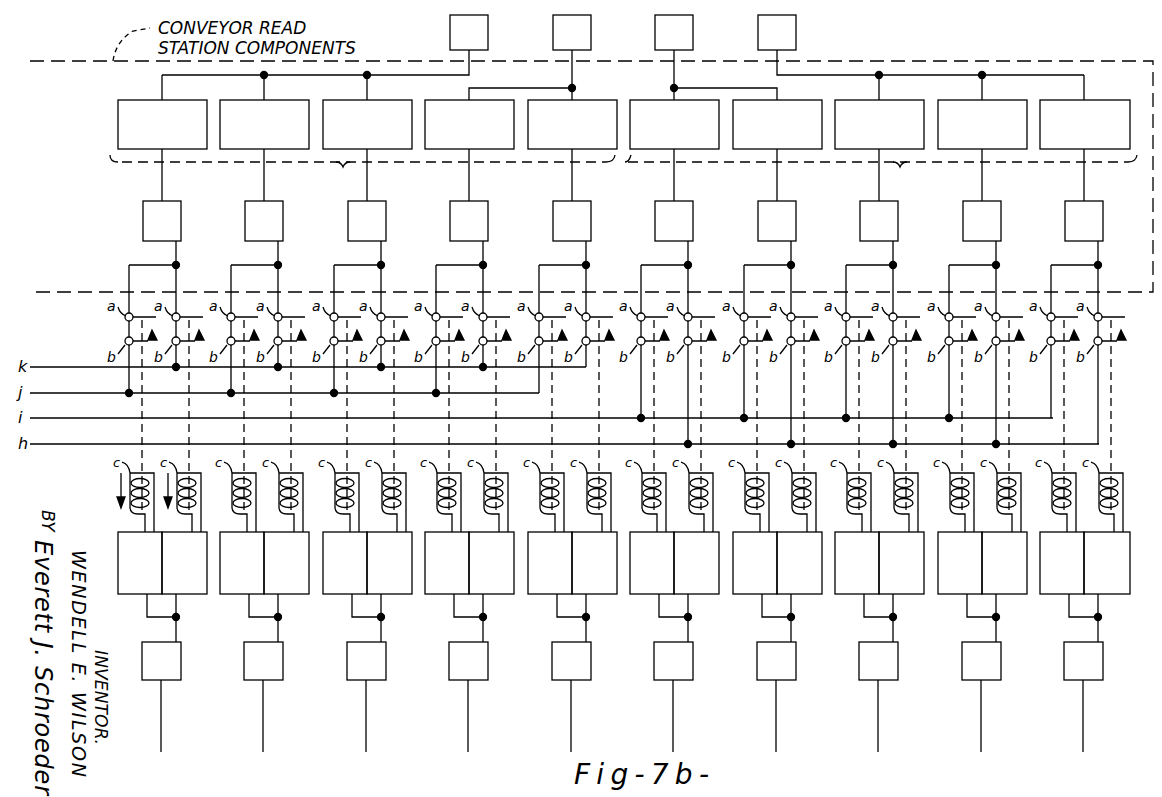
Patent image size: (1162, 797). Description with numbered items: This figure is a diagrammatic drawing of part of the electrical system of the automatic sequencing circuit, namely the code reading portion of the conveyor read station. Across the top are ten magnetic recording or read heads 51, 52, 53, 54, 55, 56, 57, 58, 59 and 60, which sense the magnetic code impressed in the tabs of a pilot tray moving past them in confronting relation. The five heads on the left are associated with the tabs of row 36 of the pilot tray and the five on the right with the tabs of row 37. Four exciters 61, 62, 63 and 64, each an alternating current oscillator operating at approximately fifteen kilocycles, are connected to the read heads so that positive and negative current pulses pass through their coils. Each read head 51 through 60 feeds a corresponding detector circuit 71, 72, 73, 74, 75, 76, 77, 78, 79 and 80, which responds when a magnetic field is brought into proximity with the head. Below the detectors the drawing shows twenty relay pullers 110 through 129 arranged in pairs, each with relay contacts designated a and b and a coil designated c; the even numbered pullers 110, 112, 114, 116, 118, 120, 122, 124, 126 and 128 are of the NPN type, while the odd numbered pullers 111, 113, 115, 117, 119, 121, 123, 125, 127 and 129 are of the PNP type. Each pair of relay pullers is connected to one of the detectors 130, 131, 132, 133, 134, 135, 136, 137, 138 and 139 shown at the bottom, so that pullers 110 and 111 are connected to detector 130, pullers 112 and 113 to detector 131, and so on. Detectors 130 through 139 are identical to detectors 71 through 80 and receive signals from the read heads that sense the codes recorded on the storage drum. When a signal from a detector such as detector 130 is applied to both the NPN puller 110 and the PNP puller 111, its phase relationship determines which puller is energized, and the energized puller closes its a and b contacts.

The row of tabs 36 is at (362, 172).
The row of tabs 37 is at (881, 173).
The magnetic detecting head 51 is at (172, 100).
The magnetic detecting head 52 is at (274, 100).
The magnetic detecting head 53 is at (377, 100).
The magnetic detecting head 54 is at (479, 100).
The magnetic detecting head 55 is at (582, 100).
The magnetic detecting head 56 is at (684, 100).
The magnetic detecting head 57 is at (787, 100).
The magnetic detecting head 58 is at (889, 100).
The magnetic detecting head 59 is at (992, 100).
The magnetic detecting head 60 is at (1094, 100).
The exciter 61 is at (488, 32).
The exciter 62 is at (591, 32).
The exciter 63 is at (693, 32).
The exciter 64 is at (796, 32).
The detector circuit 71 is at (170, 201).
The detector circuit 72 is at (272, 201).
The detector circuit 73 is at (375, 201).
The detector circuit 74 is at (477, 201).
The detector circuit 75 is at (580, 201).
The detector circuit 76 is at (682, 201).
The detector circuit 77 is at (785, 201).
The detector circuit 78 is at (898, 212).
The detector circuit 79 is at (990, 201).
The detector circuit 80 is at (1092, 201).
The NPN relay puller 110 is at (122, 596).
The PNP relay puller 111 is at (168, 595).
The NPN relay puller 112 is at (236, 596).
The PNP relay puller 113 is at (270, 595).
The NPN relay puller 114 is at (339, 596).
The PNP relay puller 115 is at (373, 595).
The NPN relay puller 116 is at (441, 596).
The PNP relay puller 117 is at (475, 595).
The NPN relay puller 118 is at (544, 596).
The PNP relay puller 119 is at (578, 595).
The NPN relay puller 120 is at (646, 596).
The PNP relay puller 121 is at (680, 595).
The NPN relay puller 122 is at (749, 596).
The PNP relay puller 123 is at (783, 595).
The NPN relay puller 124 is at (851, 596).
The PNP relay puller 125 is at (885, 595).
The NPN relay puller 126 is at (954, 596).
The PNP relay puller 127 is at (988, 595).
The NPN relay puller 128 is at (1056, 596).
The PNP relay puller 129 is at (1090, 595).
The detector circuit 130 is at (181, 660).
The detector circuit 131 is at (283, 660).
The detector circuit 132 is at (386, 660).
The detector circuit 133 is at (488, 660).
The detector circuit 134 is at (591, 660).
The detector circuit 135 is at (693, 660).
The detector circuit 136 is at (796, 660).
The detector circuit 137 is at (898, 660).
The detector circuit 138 is at (1001, 660).
The detector circuit 139 is at (1103, 660).